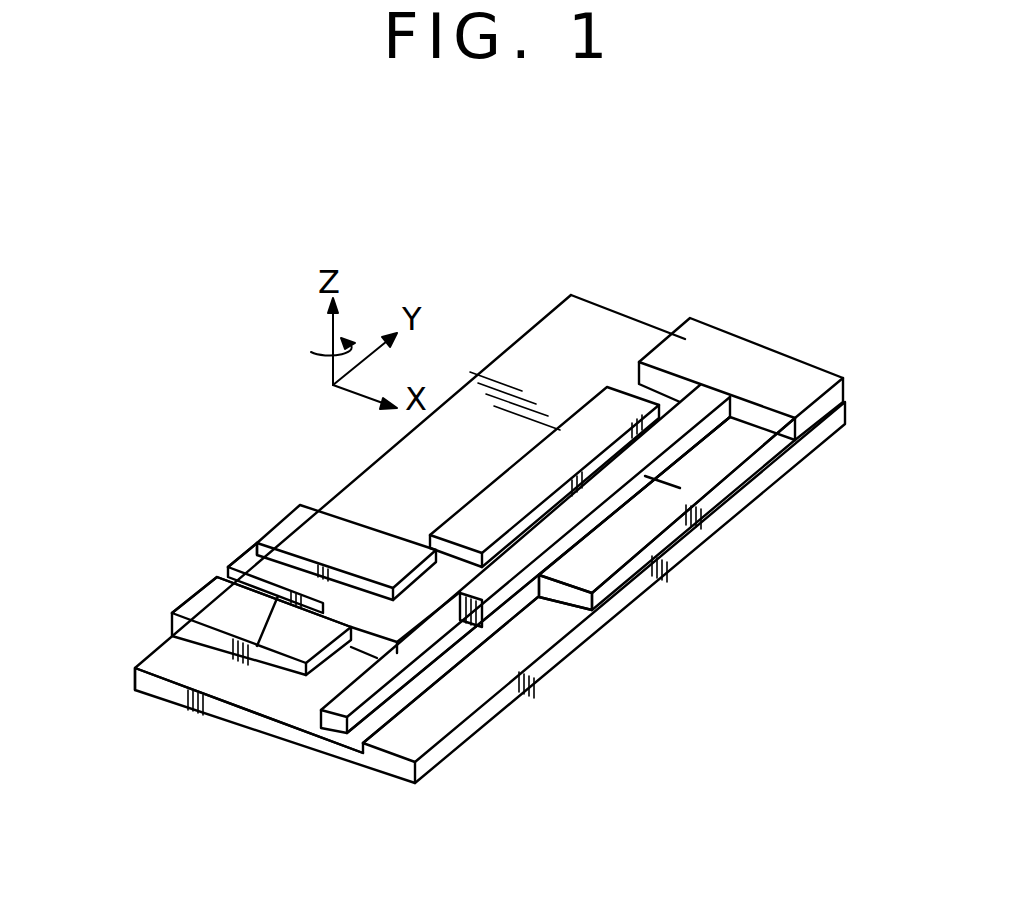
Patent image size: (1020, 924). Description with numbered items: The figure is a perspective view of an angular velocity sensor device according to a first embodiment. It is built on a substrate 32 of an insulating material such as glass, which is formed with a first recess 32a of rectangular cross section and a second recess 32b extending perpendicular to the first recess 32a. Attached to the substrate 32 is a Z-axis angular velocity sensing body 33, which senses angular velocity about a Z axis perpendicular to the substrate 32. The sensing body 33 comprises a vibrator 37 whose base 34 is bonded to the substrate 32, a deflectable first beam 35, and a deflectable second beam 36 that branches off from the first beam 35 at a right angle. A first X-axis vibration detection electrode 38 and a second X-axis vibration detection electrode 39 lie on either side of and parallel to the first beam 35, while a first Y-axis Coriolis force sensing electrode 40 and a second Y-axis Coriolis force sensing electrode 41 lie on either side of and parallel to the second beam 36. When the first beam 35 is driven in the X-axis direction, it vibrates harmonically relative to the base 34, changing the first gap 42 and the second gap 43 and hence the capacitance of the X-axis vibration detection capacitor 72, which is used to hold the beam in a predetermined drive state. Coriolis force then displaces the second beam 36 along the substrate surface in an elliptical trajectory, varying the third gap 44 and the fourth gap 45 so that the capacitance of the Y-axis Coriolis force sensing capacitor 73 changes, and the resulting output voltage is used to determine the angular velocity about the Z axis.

The substrate 32 is at (538, 692).
The first recess 32a is at (353, 744).
The second recess 32b is at (345, 676).
The Z-axis angular velocity sensing body 33 is at (604, 523).
The base 34 is at (810, 378).
The first beam 35 is at (397, 692).
The second beam 36 is at (245, 553).
The vibrator 37 is at (708, 400).
The first X-axis vibration detection electrode 38 is at (715, 470).
The second X-axis vibration detection electrode 39 is at (608, 397).
The first Y-axis Coriolis force sensing electrode 40 is at (173, 603).
The second Y-axis Coriolis force sensing electrode 41 is at (290, 517).
The first gap 42 is at (607, 507).
The second gap 43 is at (533, 522).
The third gap 44 is at (240, 572).
The fourth gap 45 is at (247, 552).
The X-axis vibration detection capacitor 72 is at (600, 562).
The Y-axis Coriolis force sensing capacitor 73 is at (200, 612).